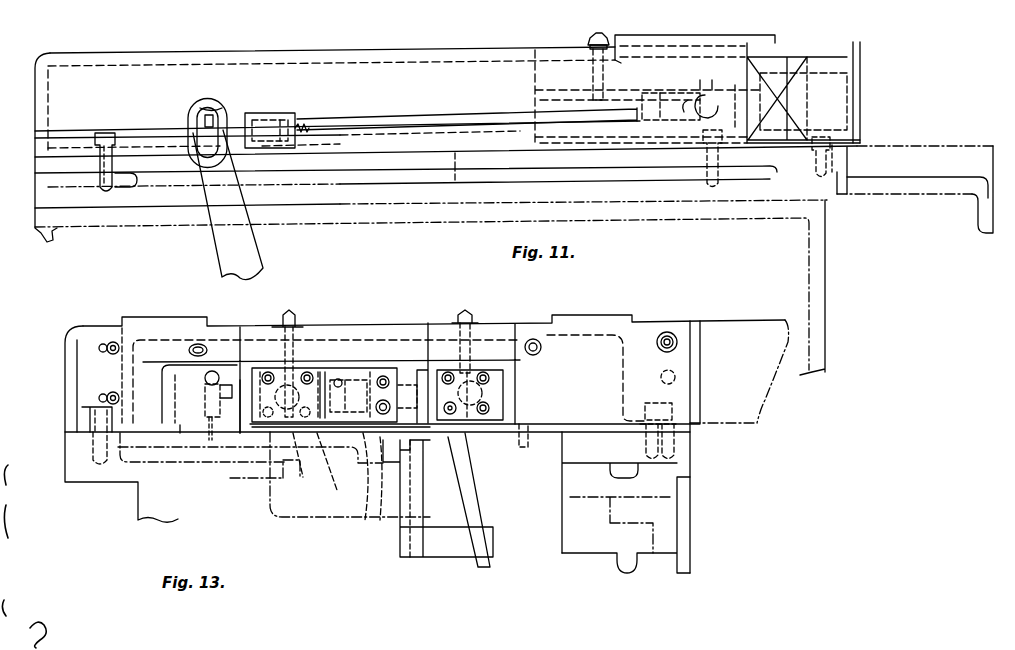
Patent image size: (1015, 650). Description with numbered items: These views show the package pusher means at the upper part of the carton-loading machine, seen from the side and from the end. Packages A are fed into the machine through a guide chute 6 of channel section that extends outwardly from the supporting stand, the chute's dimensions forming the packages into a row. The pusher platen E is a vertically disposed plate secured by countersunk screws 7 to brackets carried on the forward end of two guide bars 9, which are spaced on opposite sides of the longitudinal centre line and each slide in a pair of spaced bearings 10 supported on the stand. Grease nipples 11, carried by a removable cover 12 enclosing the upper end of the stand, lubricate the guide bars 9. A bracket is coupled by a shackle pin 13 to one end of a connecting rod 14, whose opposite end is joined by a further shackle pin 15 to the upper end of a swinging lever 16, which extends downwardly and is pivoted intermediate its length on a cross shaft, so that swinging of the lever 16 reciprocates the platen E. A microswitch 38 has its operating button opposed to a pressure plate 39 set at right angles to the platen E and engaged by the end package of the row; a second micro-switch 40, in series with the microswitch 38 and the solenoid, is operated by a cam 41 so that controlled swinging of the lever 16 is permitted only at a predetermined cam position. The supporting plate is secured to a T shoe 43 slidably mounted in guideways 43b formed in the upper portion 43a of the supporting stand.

In FIG. 11, the removable cover 12 is at (104, 52).
In FIG. 13, the removable cover 12 is at (593, 330).
In FIG. 11, the shackle pin 15 is at (214, 121).
In FIG. 11, the connecting rod 14 is at (461, 120).
In FIG. 11, the grease nipples 11 is at (588, 39).
In FIG. 13, the grease nipples 11 is at (296, 318).
In FIG. 11, the shackle pin 13 is at (711, 90).
In FIG. 11, the packages A is at (816, 62).
In FIG. 11, the guide chute 6 is at (862, 109).
In FIG. 11, the pusher platen E is at (791, 140).
In FIG. 13, the pusher platen E is at (418, 372).
In FIG. 13, the countersunk screws 7 is at (470, 378).
In FIG. 13, the guide bars 9 is at (298, 440).
In FIG. 13, the bearings 10 is at (553, 403).
In FIG. 13, the microswitch 38 is at (205, 388).
In FIG. 13, the pressure plate 39 is at (244, 433).
In FIG. 13, the second micro-switch 40 is at (190, 425).
In FIG. 13, the cam 41 is at (214, 440).
In FIG. 13, the T shoe 43 is at (410, 548).
In FIG. 13, the upper portion of the supporting stand 43a is at (372, 447).
In FIG. 13, the guideways 43b is at (363, 463).
In FIG. 13, the swinging lever 16 is at (482, 527).